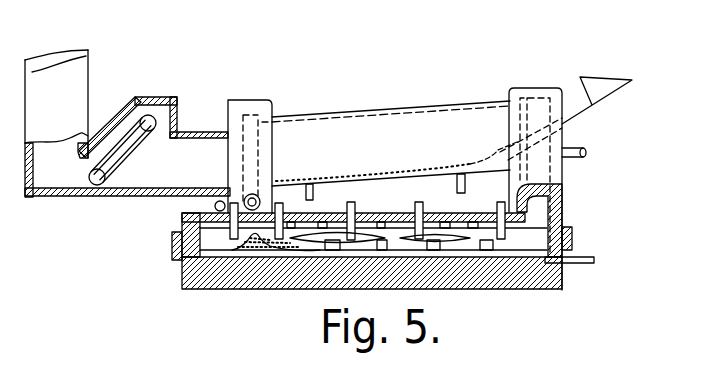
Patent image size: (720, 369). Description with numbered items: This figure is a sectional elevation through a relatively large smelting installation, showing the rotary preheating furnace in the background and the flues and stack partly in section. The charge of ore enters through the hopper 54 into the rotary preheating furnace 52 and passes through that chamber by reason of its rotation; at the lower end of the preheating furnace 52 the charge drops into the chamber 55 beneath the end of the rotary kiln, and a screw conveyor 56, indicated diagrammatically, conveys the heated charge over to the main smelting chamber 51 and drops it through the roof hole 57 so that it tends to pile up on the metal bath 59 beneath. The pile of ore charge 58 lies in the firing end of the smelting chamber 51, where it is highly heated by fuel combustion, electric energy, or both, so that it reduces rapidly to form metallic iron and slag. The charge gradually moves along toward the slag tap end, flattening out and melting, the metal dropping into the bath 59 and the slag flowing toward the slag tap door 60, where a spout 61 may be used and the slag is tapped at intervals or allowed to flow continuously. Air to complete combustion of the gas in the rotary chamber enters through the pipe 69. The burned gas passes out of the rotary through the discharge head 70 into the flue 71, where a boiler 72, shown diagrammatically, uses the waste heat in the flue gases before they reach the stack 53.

The main smelting chamber 51 is at (405, 232).
The preheating furnace 52 is at (360, 143).
The stack 53 is at (81, 104).
The hopper 54 is at (615, 77).
The chamber 55 is at (247, 118).
The screw conveyor 56 is at (248, 198).
The roof hole 57 is at (247, 233).
The pile of ore charge 58 is at (247, 228).
The metal bath 59 is at (453, 257).
The slag tap door 60 is at (572, 238).
The spout 61 is at (597, 257).
The pipe 69 is at (590, 148).
The discharge head 70 is at (258, 100).
The flue 71 is at (127, 147).
The boiler 72 is at (128, 163).